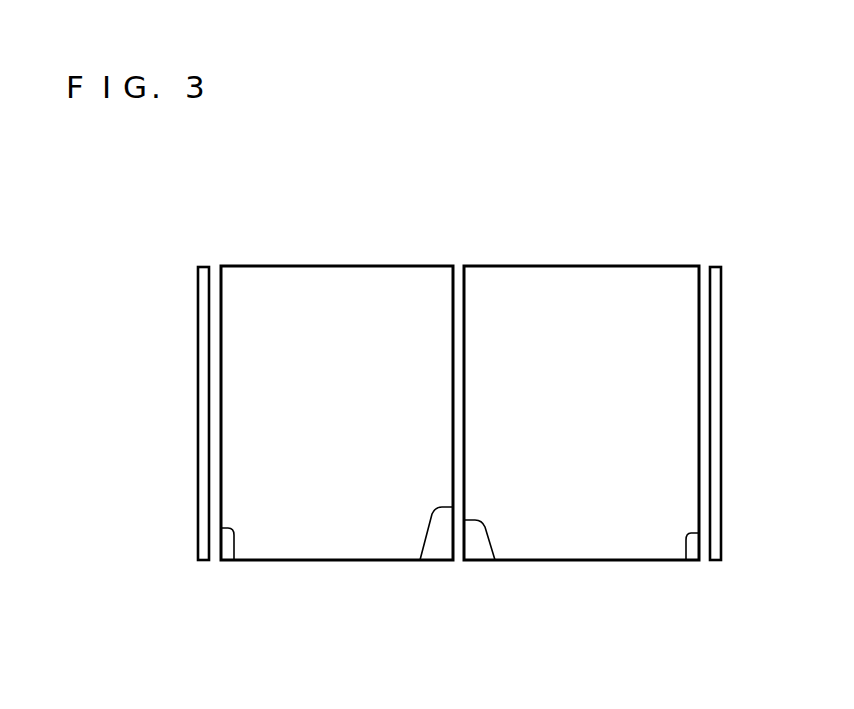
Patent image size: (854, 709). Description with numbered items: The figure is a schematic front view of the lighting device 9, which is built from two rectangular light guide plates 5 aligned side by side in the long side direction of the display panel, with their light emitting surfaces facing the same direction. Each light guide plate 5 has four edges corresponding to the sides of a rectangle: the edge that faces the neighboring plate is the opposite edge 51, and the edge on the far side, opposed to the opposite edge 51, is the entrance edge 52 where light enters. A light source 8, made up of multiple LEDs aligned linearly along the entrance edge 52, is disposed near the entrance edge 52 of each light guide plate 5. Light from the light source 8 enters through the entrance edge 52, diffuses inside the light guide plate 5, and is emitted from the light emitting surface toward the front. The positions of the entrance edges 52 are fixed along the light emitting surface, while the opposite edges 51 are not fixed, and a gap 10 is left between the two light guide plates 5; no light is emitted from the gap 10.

The lighting device 9 is at (733, 148).
The light guide plate 5 is at (340, 265).
The light source 8 is at (197, 410).
The opposite edge 51 is at (495, 560).
The entrance edge 52 is at (686, 560).
The gap 10 is at (460, 557).